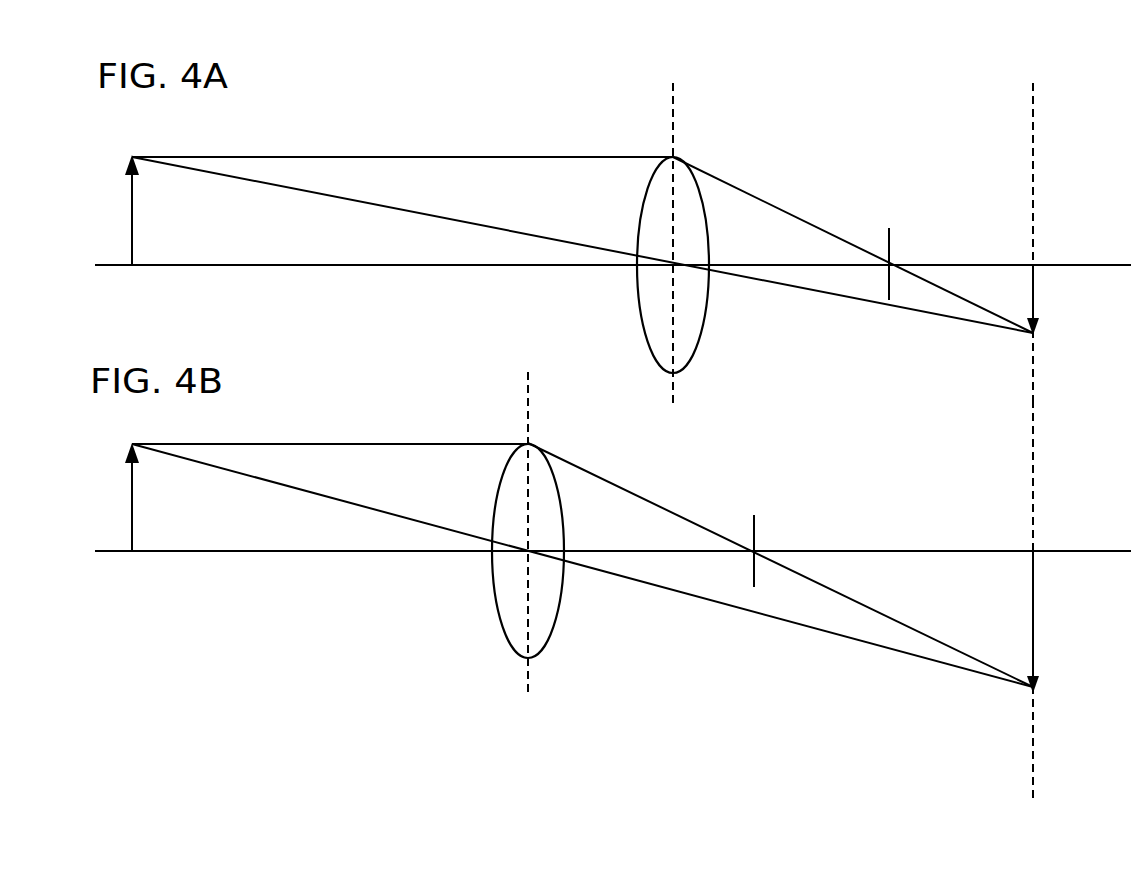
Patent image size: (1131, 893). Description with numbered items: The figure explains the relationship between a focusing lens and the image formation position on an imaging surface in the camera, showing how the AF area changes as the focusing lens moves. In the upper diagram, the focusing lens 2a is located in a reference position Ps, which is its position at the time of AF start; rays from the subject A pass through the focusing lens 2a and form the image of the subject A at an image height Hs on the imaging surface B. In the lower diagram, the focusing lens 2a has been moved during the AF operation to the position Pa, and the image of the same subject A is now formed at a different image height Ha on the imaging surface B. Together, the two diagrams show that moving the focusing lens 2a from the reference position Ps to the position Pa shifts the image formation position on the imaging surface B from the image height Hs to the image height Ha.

In FIG. 4A, the focusing lens 2a is at (684, 157).
In FIG. 4B, the focusing lens 2a is at (538, 444).
In FIG. 4A, the subject A is at (145, 210).
In FIG. 4B, the subject A is at (145, 497).
In FIG. 4A, the imaging surface B is at (1031, 217).
In FIG. 4A, the image height Hs is at (1063, 300).
In FIG. 4B, the image height Ha is at (1064, 622).
In FIG. 4A, the reference position Ps is at (671, 263).
In FIG. 4B, the position of focusing lens during AF operation Pa is at (534, 564).